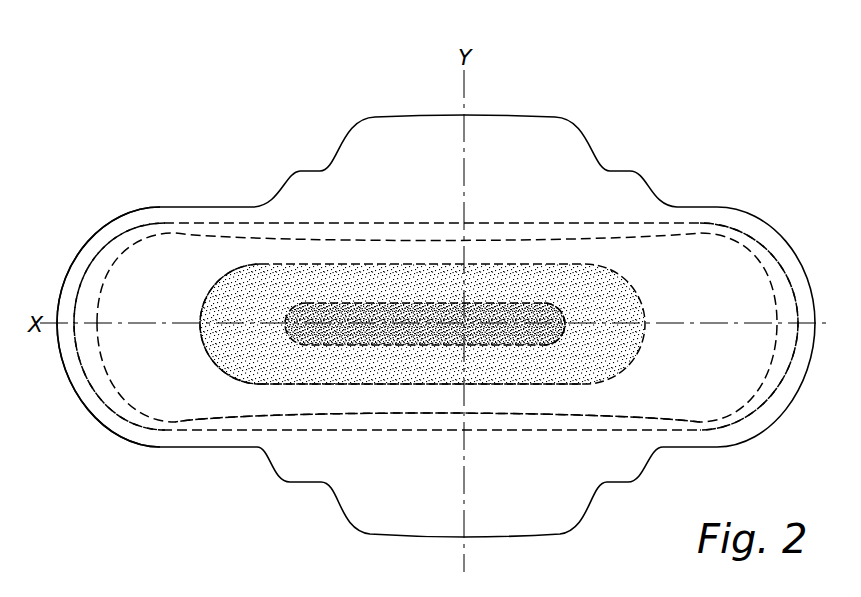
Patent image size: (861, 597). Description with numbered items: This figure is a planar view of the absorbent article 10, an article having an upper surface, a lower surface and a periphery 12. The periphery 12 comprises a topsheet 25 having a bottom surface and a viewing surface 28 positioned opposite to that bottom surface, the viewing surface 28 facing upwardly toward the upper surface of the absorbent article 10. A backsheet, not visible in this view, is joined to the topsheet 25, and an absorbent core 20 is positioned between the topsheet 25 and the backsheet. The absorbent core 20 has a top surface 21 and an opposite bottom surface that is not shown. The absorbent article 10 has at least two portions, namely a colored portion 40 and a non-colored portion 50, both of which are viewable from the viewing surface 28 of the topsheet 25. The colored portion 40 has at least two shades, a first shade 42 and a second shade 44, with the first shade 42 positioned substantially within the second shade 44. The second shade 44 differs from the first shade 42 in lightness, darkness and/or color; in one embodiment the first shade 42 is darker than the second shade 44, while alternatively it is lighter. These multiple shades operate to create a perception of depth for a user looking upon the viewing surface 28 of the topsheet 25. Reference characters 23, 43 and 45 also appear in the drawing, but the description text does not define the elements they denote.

The absorbent article 10 is at (697, 106).
The periphery 12 is at (717, 213).
The absorbent core 20 is at (733, 283).
The top surface 21 is at (753, 360).
The lower inner layer edge 23 is at (280, 420).
The topsheet 25 is at (153, 252).
The viewing surface 28 is at (218, 242).
The colored portion 40 is at (535, 256).
The first shade 42 is at (295, 318).
The rear end of central zone 43 is at (557, 347).
The second shade 44 is at (212, 357).
The lateral edge of acquisition zone 45 is at (325, 386).
The non-colored portion 50 is at (113, 300).